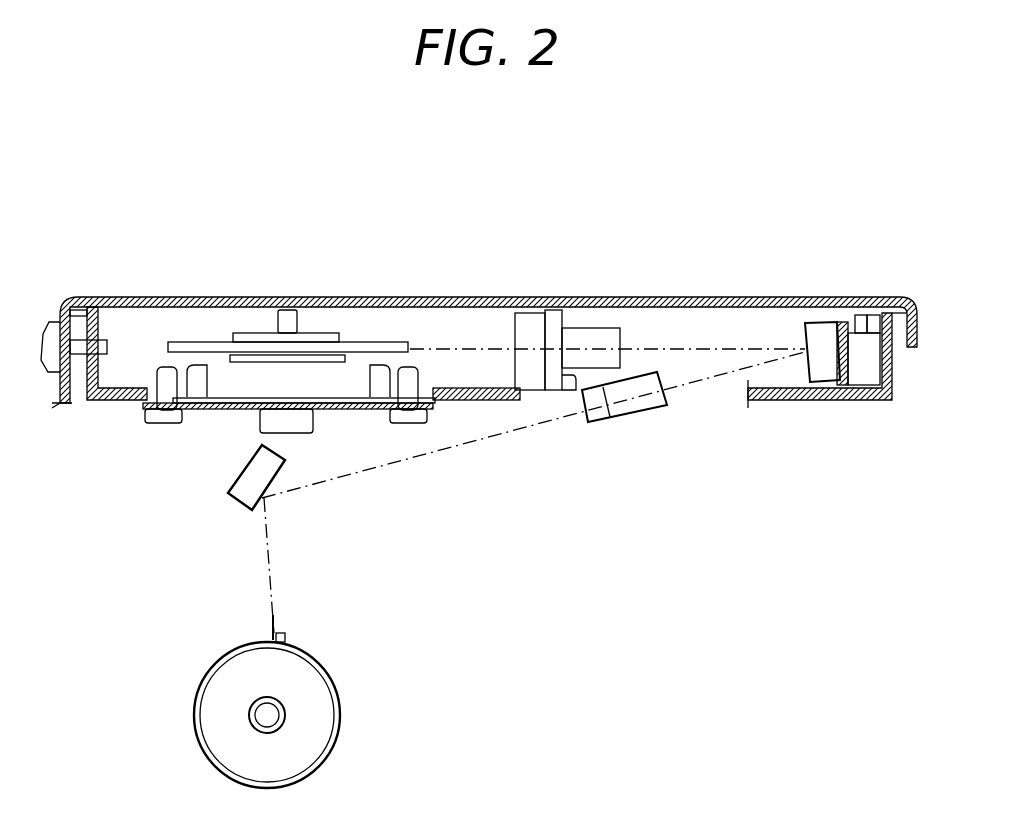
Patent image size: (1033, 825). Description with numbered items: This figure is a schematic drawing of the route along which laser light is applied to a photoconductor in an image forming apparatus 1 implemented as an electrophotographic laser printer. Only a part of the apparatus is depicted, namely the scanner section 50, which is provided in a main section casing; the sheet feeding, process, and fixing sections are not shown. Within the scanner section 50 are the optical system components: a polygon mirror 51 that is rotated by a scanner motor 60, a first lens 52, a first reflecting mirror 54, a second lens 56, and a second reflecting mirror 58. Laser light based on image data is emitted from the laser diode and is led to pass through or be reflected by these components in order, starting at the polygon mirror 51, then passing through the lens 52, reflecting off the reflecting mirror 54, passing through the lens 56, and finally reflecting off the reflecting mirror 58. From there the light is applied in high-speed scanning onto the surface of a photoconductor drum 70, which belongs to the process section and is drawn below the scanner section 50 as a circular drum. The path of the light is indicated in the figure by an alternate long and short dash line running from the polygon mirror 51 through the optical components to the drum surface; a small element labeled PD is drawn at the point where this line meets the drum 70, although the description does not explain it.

The image forming apparatus 1 is at (808, 207).
The scanner section 50 is at (528, 266).
The polygon mirror 51 is at (388, 345).
The lens 52 is at (600, 337).
The reflecting mirror 54 is at (816, 345).
The lens 56 is at (663, 376).
The reflecting mirror 58 is at (248, 462).
The scanner motor 60 is at (222, 380).
The photodetector PD is at (286, 633).
The photoconductor drum 70 is at (341, 714).